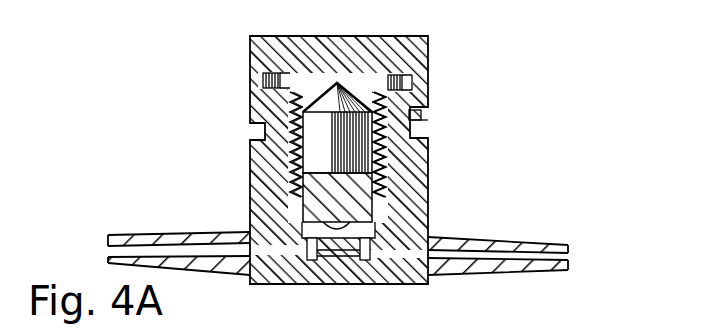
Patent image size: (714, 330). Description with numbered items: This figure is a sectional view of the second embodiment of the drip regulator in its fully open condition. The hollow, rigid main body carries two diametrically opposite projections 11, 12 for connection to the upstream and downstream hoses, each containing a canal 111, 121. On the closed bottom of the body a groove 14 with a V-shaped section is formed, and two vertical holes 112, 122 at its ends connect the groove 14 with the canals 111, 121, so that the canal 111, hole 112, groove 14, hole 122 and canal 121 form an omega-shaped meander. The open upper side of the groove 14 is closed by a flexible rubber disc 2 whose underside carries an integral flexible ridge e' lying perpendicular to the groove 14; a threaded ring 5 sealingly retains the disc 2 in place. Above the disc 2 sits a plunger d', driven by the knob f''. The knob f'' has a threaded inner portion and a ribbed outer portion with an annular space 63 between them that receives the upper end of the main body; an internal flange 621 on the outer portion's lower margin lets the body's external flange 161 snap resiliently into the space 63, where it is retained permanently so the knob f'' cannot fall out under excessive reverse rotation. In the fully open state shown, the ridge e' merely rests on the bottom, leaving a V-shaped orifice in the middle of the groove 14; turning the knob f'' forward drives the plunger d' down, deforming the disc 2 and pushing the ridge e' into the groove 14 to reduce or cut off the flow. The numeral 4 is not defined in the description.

The knob f'' is at (339, 143).
The annular space 63 is at (279, 80).
The internal flange 621 is at (428, 107).
The external flange 161 is at (429, 122).
The flexible disc 2 is at (386, 129).
The plunger d' is at (386, 101).
The threaded ring 5 is at (288, 177).
The threaded bore 4 is at (290, 202).
The ridge e' is at (384, 217).
The vertical hole 122 is at (312, 258).
The vertical hole 112 is at (365, 253).
The groove 14 is at (337, 242).
The projection 12 is at (156, 256).
The canal 121 is at (108, 250).
The projection 11 is at (521, 272).
The canal 111 is at (570, 257).